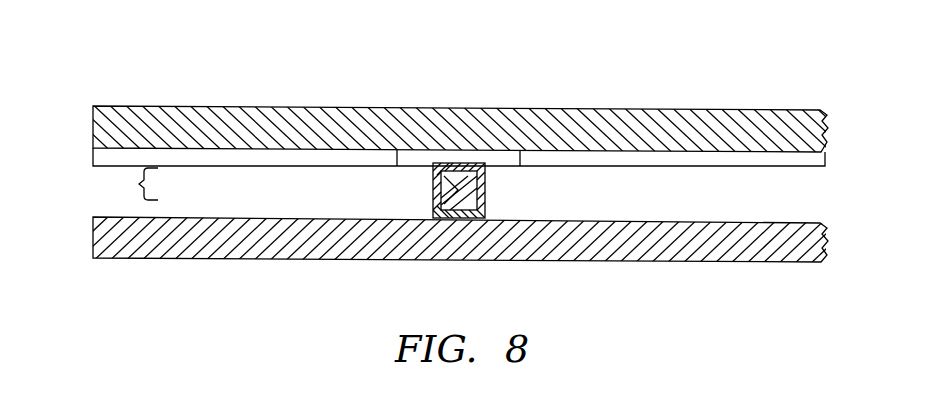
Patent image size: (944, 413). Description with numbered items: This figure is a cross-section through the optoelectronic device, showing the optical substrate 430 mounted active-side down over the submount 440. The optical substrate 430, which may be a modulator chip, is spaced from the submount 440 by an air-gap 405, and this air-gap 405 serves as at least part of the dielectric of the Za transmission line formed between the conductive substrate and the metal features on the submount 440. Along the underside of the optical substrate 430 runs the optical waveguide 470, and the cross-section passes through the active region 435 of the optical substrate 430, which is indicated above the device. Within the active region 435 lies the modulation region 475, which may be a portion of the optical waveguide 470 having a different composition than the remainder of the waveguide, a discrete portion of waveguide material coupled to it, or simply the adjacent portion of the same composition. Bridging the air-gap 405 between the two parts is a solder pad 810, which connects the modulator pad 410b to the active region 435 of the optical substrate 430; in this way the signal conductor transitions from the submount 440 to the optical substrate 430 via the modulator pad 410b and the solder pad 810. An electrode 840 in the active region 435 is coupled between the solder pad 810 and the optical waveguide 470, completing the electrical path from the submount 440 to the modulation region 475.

The optical substrate 430 is at (237, 112).
The optical waveguide 470 is at (97, 152).
The modulation region 475 is at (405, 156).
The active region 435 is at (446, 78).
The electrode 840 is at (474, 163).
The solder pad 810 is at (443, 187).
The modulator pad 410b is at (480, 208).
The air-gap 405 is at (138, 183).
The submount 440 is at (155, 257).